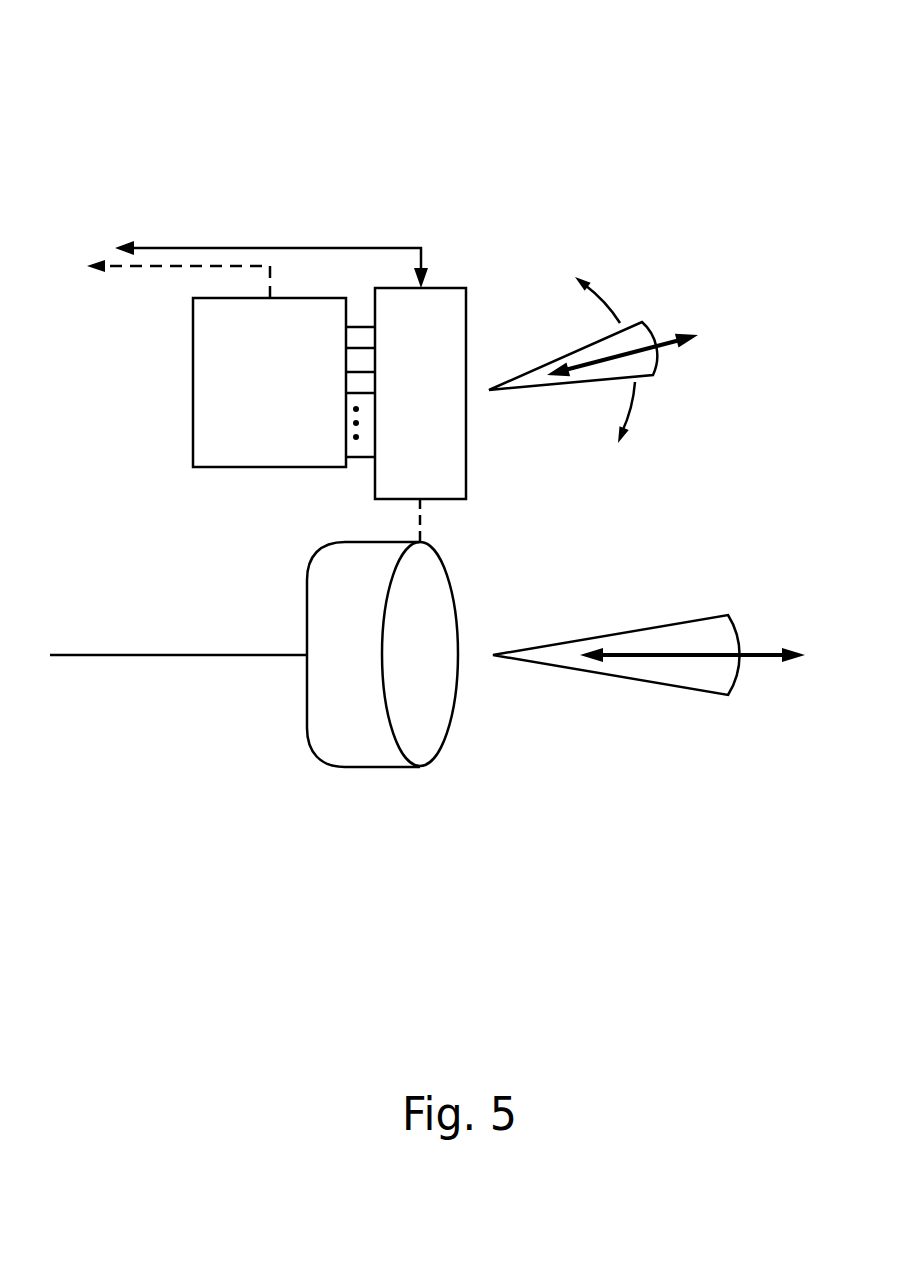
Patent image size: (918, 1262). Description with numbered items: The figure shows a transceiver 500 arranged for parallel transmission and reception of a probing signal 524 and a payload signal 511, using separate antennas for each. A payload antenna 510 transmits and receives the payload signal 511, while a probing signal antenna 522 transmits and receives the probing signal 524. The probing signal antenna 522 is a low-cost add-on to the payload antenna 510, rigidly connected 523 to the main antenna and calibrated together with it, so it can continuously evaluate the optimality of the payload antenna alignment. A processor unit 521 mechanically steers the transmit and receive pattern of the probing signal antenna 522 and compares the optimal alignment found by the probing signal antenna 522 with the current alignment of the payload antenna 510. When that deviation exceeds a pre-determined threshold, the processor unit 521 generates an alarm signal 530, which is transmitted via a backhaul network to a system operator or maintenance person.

The transceiver 500 is at (562, 92).
The payload antenna 510 is at (434, 808).
The payload signal 511 is at (790, 708).
The processor unit 521 is at (178, 387).
The probing signal antenna 522 is at (474, 270).
The rigid connection 523 is at (450, 523).
The probing signal 524 is at (714, 377).
The alarm signal 530 is at (115, 325).